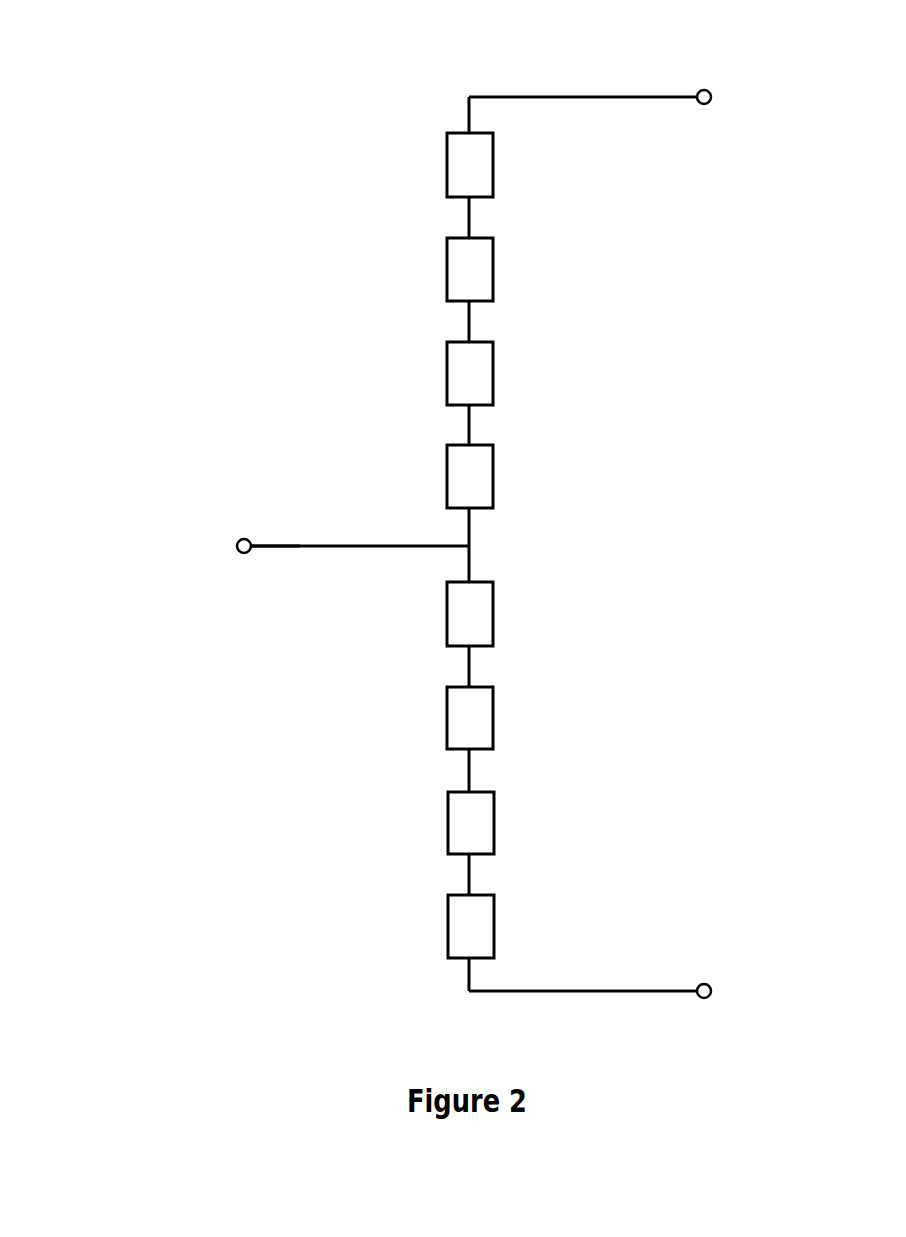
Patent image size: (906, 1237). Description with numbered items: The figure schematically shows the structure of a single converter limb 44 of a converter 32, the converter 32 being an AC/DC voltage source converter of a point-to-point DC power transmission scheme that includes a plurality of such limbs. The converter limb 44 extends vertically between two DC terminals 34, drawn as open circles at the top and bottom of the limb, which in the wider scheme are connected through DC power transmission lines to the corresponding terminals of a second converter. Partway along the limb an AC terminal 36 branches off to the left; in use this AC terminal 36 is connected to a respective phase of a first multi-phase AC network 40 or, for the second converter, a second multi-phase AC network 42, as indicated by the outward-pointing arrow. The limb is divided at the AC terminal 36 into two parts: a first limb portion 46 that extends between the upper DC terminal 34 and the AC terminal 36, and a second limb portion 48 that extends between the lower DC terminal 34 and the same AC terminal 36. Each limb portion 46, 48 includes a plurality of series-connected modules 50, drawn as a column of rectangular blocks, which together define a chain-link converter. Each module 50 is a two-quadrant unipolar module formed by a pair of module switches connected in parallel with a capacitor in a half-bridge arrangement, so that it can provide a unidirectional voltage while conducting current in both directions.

The converter 32 is at (326, 213).
The DC terminal 34 is at (708, 109).
The AC terminal 36 is at (252, 536).
The first multi-phase AC network 40 is at (175, 548).
The second multi-phase AC network 42 is at (226, 549).
The converter limb 44 is at (469, 92).
The first limb portion 46 is at (446, 327).
The second limb portion 48 is at (457, 769).
The module 50 is at (472, 171).